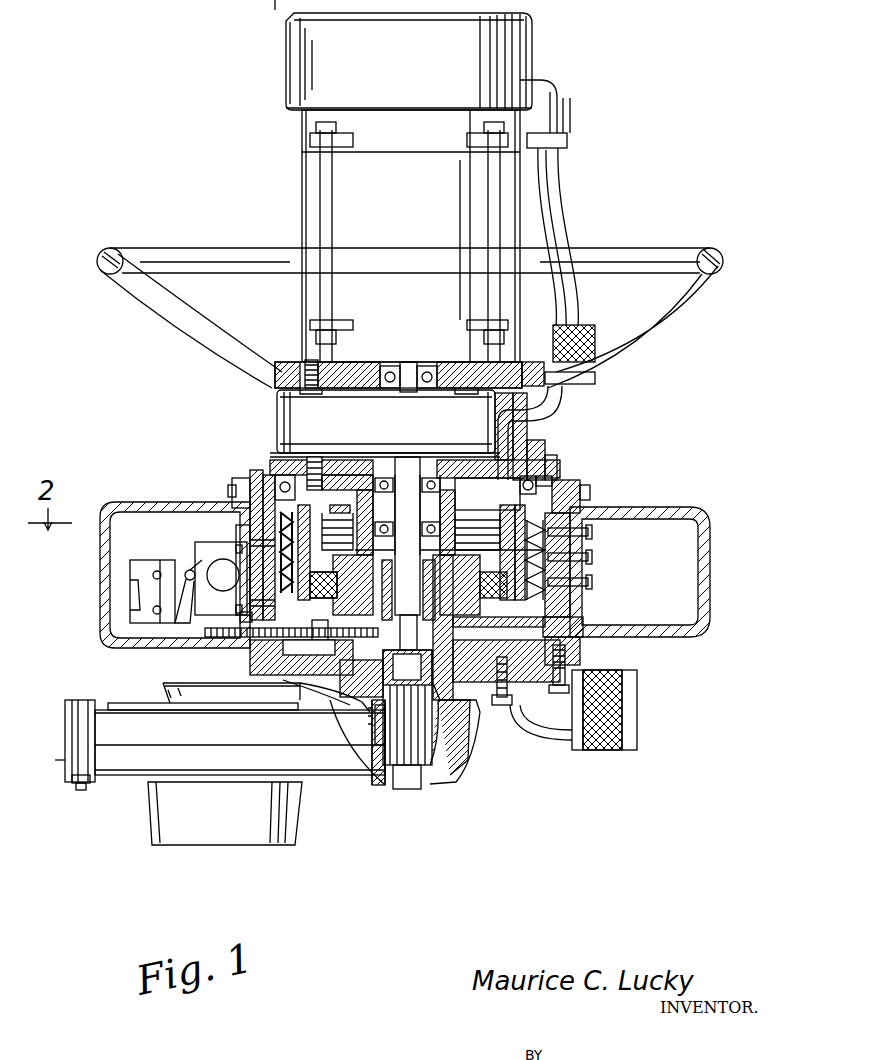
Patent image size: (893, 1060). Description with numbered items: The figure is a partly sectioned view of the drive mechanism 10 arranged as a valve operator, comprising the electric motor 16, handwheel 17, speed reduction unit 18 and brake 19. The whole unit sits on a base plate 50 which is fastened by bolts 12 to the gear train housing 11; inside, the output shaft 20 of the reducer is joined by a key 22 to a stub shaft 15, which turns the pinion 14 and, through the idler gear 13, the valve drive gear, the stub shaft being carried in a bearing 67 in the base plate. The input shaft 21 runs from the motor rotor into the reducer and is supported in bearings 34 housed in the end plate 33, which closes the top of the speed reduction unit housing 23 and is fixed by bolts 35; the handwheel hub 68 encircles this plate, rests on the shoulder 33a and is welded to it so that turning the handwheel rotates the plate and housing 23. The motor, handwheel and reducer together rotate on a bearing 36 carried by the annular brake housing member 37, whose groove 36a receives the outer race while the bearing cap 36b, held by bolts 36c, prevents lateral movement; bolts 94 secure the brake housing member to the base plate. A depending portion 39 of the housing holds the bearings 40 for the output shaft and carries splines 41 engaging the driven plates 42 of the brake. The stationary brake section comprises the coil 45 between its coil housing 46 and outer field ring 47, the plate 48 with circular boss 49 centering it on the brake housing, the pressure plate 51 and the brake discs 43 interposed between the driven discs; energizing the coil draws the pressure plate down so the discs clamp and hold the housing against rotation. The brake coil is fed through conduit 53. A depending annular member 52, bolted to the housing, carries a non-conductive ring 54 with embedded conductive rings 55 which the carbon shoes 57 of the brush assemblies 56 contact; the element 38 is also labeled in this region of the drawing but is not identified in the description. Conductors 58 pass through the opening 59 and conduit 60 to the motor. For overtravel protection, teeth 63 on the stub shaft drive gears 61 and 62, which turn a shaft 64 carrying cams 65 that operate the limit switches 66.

The drive mechanism 10 is at (284, 207).
The gear train housing 11 is at (70, 748).
The bolts 12 is at (512, 704).
The idler gear 13 is at (360, 736).
The pinion 14 is at (462, 732).
The stub shaft 15 is at (348, 694).
The electric motor 16 is at (532, 45).
The handwheel 17 is at (724, 260).
The speed reduction unit 18 is at (262, 400).
The brake 19 is at (572, 506).
The output shaft 20 is at (450, 553).
The input shaft 21 is at (405, 362).
The key 22 is at (392, 568).
The speed reduction unit housing 23 is at (277, 410).
The end plate 33 is at (518, 362).
The shoulder 33a is at (534, 362).
The bearings 34 is at (450, 366).
The bolts 35 is at (311, 360).
The bearing 36 is at (640, 472).
The groove 36a is at (256, 468).
The bearing cap 36b is at (548, 450).
The bolts 36c is at (552, 470).
The brake housing member 37 is at (266, 474).
The contact pin 38 is at (612, 539).
The depending portion 39 is at (362, 497).
The bearings 40 is at (406, 515).
The splines 41 is at (456, 497).
The driven plates 42 is at (552, 482).
The brake discs 43 is at (540, 496).
The coil 45 is at (338, 592).
The coil housing 46 is at (464, 566).
The outer field ring 47 is at (306, 604).
The plate 48 is at (566, 630).
The circular boss 49 is at (454, 608).
The base plate 50 is at (540, 648).
The pressure plate 51 is at (262, 492).
The depending annular member 52 is at (272, 500).
The conduit 53 is at (640, 702).
The non-conductive ring 54 is at (272, 518).
The electrically conductive rings 55 is at (270, 548).
The brush assemblies 56 is at (605, 556).
The carbon shoes 57 is at (548, 594).
The conductors 58 is at (548, 410).
The opening 59 is at (550, 432).
The conduit 60 is at (566, 195).
The gear 61 is at (245, 650).
The gear 62 is at (205, 640).
The teeth 63 is at (407, 719).
The shaft 64 is at (228, 626).
The cams 65 is at (205, 570).
The limit switches 66 is at (130, 578).
The bearing 67 is at (462, 712).
The hub 68 is at (282, 362).
The bolts 94 is at (578, 664).